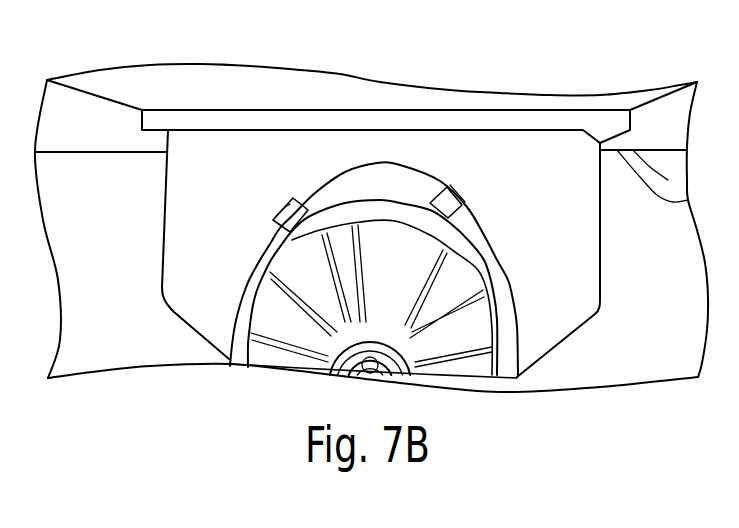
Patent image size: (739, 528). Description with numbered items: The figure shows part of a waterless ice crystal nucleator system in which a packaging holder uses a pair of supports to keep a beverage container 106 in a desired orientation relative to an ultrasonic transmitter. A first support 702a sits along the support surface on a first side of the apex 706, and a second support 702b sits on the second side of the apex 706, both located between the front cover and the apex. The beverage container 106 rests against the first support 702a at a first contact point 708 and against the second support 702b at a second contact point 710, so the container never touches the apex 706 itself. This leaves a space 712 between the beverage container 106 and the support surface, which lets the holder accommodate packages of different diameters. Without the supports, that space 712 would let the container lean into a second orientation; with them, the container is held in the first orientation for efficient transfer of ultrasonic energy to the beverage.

The beverage container 106 is at (517, 330).
The first support 702a is at (282, 204).
The second support 702b is at (480, 216).
The apex 706 is at (378, 162).
The first contact point 708 is at (298, 235).
The second contact point 710 is at (472, 248).
The space 712 is at (378, 202).